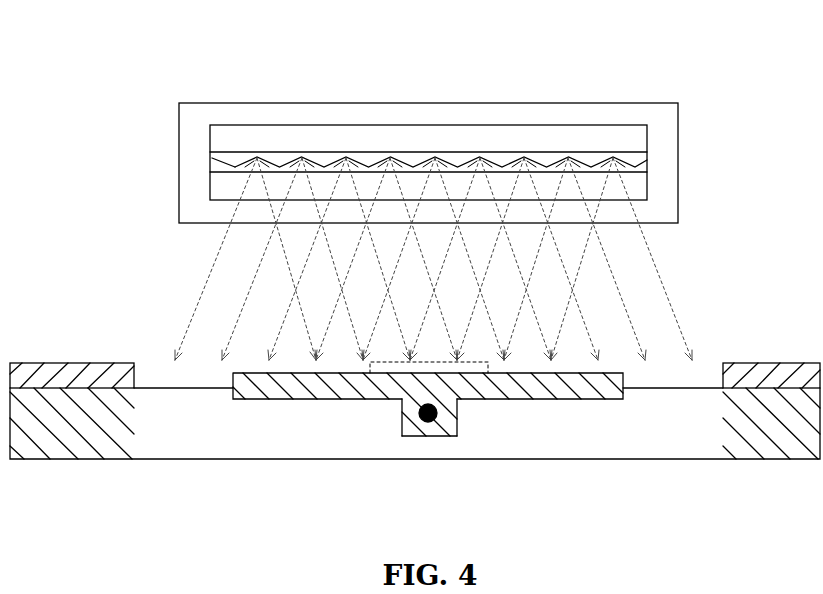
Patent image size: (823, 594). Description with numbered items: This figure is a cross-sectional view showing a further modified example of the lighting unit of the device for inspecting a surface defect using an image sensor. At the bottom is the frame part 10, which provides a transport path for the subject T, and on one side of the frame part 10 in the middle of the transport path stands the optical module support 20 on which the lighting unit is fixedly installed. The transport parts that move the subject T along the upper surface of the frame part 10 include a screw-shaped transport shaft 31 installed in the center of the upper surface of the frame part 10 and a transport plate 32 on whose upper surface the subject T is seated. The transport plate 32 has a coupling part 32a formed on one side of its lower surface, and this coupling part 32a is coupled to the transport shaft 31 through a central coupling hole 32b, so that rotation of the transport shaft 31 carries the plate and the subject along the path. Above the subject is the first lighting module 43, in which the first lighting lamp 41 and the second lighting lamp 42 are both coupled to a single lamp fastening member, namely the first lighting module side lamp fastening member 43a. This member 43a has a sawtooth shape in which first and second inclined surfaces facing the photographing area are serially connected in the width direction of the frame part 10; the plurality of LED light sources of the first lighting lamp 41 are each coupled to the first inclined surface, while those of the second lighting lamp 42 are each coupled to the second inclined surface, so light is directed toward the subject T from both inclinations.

The frame part 10 is at (768, 448).
The optical module support 20 is at (792, 363).
The transport shaft 31 is at (417, 427).
The transport plate 32 is at (622, 400).
The coupling part 32a is at (433, 437).
The central coupling hole 32b is at (460, 427).
The first lighting lamp 41 is at (285, 152).
The second lighting lamp 42 is at (390, 156).
The first lighting module 43 is at (667, 162).
The first lighting module side lamp fastening member 43a is at (212, 158).
The subject T is at (383, 376).